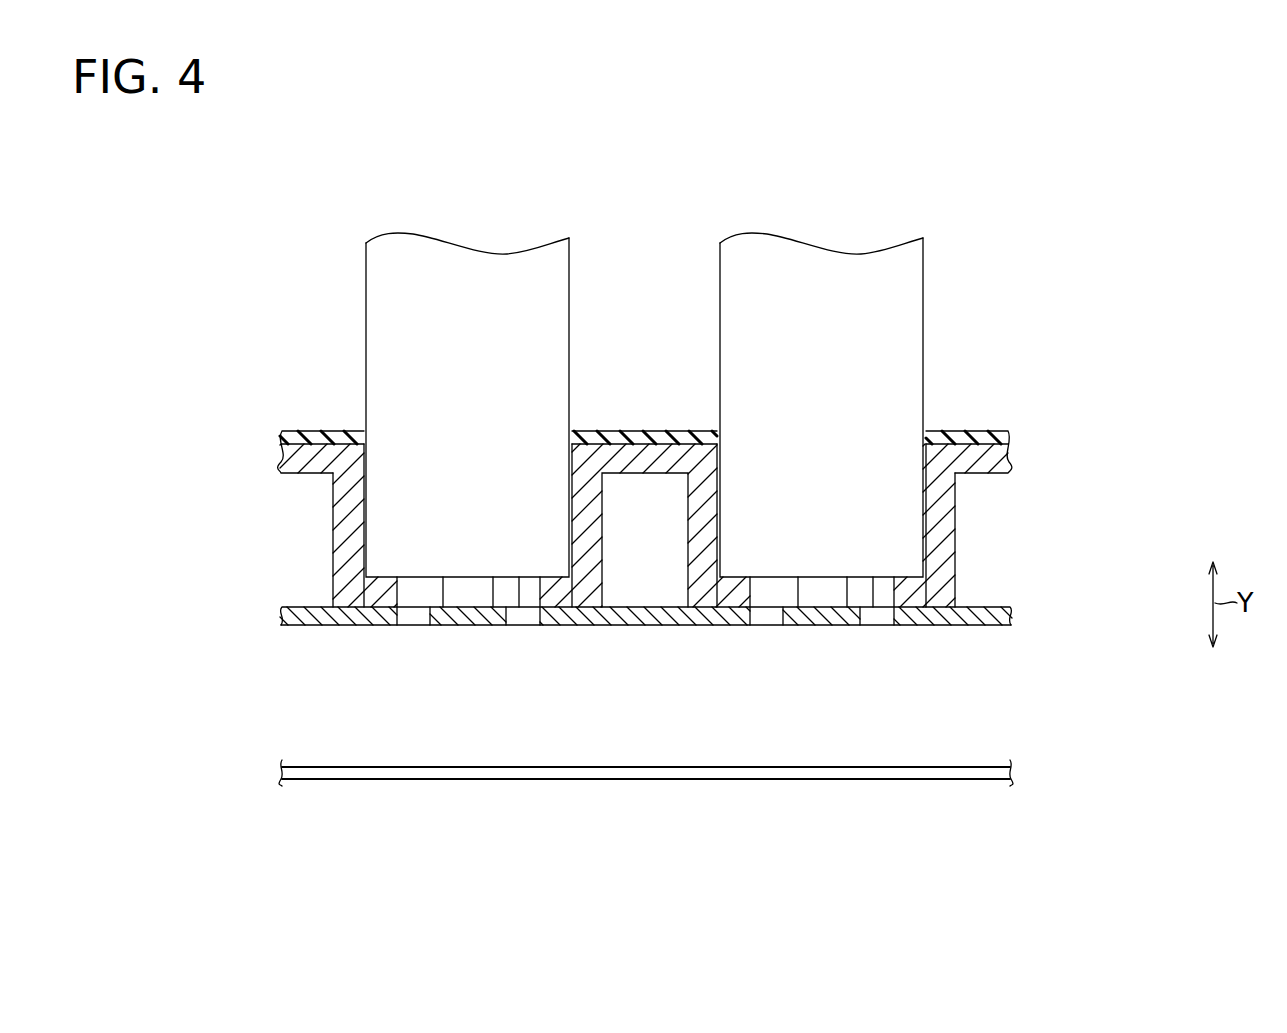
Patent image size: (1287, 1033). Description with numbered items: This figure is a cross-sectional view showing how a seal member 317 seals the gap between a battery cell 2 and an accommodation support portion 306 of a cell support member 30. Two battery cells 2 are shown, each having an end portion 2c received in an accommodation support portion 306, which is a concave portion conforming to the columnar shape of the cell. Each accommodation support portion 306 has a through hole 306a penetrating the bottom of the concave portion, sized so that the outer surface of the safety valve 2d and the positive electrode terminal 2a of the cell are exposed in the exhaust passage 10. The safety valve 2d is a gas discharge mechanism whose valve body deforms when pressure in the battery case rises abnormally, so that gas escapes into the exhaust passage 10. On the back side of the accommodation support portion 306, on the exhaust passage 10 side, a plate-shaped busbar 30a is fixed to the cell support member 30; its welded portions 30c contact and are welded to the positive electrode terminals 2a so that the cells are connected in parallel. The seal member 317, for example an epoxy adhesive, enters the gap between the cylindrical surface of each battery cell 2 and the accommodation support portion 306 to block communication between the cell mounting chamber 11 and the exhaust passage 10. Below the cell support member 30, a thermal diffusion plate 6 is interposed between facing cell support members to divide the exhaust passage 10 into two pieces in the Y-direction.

The battery cell 2 is at (365, 318).
The positive electrode terminal 2a is at (460, 597).
The end portion 2c is at (378, 566).
The safety valve 2d is at (521, 600).
The thermal diffusion plate 6 is at (932, 770).
The exhaust passage 10 is at (630, 725).
The cell mounting chamber 11 is at (634, 253).
The cell support member 30 is at (1031, 455).
The busbar 30a is at (990, 620).
The welded portion 30c is at (462, 621).
The accommodation support portion 306 is at (342, 537).
The through hole 306a is at (398, 592).
The seal member 317 is at (645, 430).